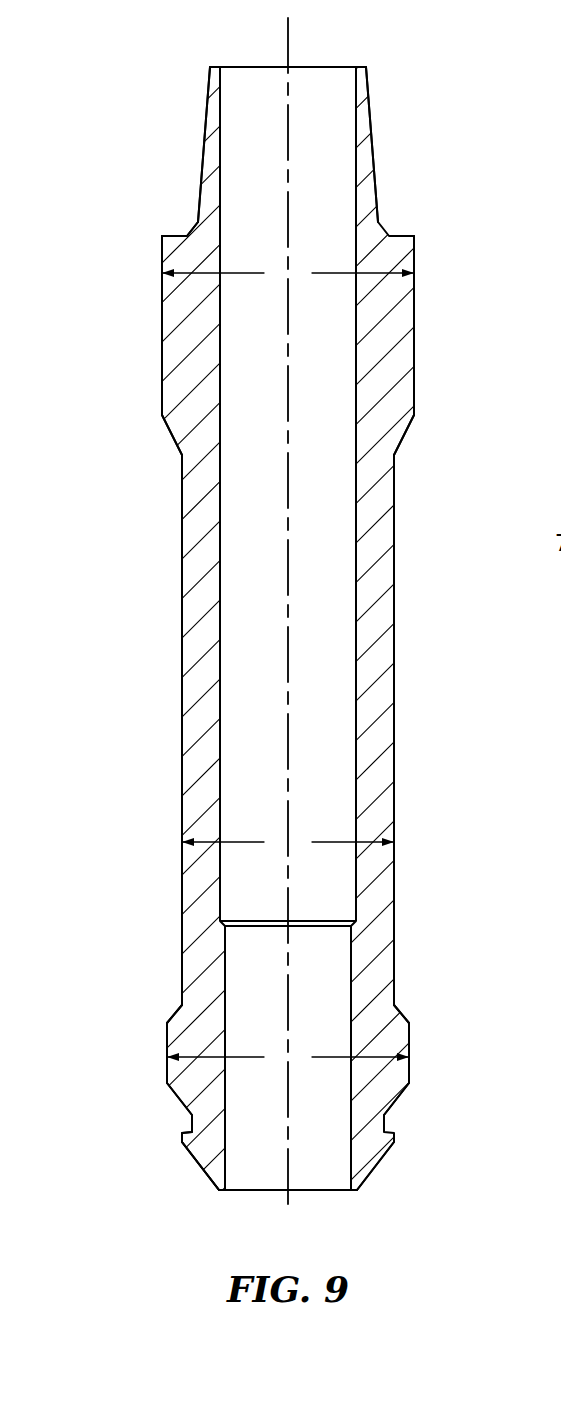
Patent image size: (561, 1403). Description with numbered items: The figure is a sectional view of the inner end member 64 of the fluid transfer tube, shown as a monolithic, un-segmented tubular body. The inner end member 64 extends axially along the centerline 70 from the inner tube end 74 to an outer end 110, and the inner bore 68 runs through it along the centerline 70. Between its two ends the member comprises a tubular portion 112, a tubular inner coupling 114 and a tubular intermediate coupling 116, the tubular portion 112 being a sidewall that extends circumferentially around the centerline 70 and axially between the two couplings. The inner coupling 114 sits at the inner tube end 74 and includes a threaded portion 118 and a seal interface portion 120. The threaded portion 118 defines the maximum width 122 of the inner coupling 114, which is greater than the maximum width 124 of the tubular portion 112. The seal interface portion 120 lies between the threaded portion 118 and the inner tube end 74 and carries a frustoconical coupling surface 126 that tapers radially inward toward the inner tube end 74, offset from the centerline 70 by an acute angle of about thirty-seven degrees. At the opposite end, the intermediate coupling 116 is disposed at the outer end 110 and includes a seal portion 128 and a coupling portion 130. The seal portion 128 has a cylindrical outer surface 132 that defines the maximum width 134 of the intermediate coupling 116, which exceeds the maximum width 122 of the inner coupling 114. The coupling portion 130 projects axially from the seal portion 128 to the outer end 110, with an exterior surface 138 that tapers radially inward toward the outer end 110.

The inner end member 64 is at (420, 91).
The centerline 70 is at (288, 28).
The outer end 110 is at (365, 67).
The coupling portion 130 is at (191, 137).
The exterior surface 138 is at (374, 163).
The seal portion 128 is at (155, 315).
The intermediate coupling 116 is at (133, 367).
The cylindrical outer surface 132 is at (415, 385).
The maximum width 134 is at (288, 273).
The tubular portion 112 is at (167, 745).
The maximum width 124 is at (288, 842).
The threaded portion 118 is at (417, 1033).
The maximum width 122 is at (288, 1057).
The inner coupling 114 is at (152, 1103).
The frustoconical coupling surface 126 is at (200, 1165).
The seal interface portion 120 is at (388, 1167).
The inner tube end 74 is at (357, 1190).
The inner bore 68 is at (258, 1150).